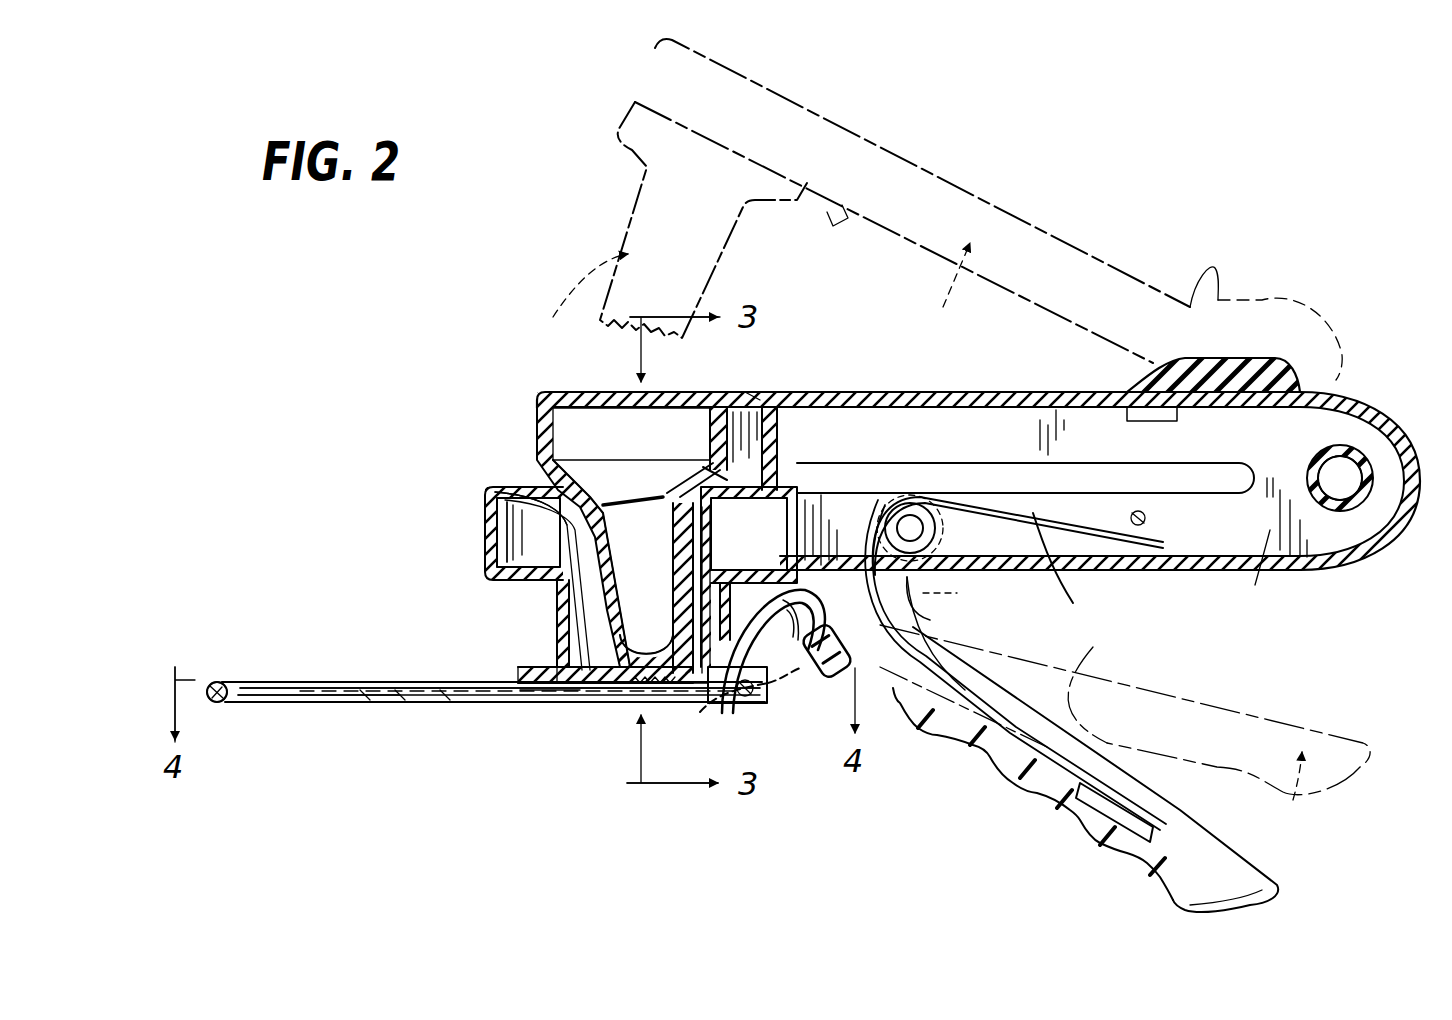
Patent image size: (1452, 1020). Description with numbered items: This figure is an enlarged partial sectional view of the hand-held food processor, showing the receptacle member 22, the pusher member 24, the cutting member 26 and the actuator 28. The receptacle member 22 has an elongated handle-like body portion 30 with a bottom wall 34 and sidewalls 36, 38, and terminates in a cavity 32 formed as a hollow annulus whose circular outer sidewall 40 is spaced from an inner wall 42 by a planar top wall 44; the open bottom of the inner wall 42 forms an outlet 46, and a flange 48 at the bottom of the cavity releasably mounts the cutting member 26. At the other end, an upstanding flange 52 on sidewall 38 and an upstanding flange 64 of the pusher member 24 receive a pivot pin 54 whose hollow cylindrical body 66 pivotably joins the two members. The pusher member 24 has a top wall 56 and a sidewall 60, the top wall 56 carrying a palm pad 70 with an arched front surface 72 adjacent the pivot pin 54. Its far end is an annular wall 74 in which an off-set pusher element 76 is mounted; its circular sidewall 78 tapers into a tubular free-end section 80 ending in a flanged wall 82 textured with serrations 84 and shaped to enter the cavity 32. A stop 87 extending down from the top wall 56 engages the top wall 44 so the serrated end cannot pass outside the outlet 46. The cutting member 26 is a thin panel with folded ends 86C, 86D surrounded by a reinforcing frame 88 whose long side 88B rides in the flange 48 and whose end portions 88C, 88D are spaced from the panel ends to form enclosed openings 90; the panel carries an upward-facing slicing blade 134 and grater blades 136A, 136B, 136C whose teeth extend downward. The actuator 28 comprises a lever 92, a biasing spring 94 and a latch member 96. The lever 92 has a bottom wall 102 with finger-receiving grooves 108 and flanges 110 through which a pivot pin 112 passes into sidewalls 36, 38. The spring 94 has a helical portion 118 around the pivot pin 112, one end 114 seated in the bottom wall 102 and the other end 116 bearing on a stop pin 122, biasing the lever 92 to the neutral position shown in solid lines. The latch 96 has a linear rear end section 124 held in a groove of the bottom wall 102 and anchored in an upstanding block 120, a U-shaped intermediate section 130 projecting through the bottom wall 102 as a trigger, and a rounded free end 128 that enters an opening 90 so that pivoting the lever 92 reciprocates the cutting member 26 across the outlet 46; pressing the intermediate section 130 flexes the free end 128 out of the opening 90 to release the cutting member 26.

The receptacle member 22 is at (924, 460).
The pusher member 24 is at (928, 392).
The cutting member 26 is at (447, 680).
The actuator 28 is at (1182, 886).
The handle-like body portion 30 is at (832, 492).
The cavity 32 is at (600, 540).
The bottom wall 34 is at (1165, 572).
The sidewall 36 is at (1045, 240).
The sidewall 38 is at (1255, 575).
The outer sidewall 40 is at (487, 515).
The inner wall 42 is at (500, 545).
The top wall 44 is at (540, 480).
The outlet 46 is at (600, 704).
The flange 48 is at (530, 667).
The upstanding flange 52 is at (1370, 440).
The pivot pin 54 is at (1367, 515).
The top wall 56 is at (805, 390).
The sidewall 60 is at (910, 366).
The upstanding flange 64 is at (1267, 473).
The hollow cylindrical body 66 is at (1335, 505).
The palm pad 70 is at (1275, 340).
The arched front surface 72 is at (1215, 300).
The annular wall 74 is at (540, 405).
The off-set pusher element 76 is at (588, 392).
The circular sidewall 78 is at (705, 470).
The free-end section 80 is at (665, 607).
The flanged wall 82 is at (702, 698).
The serrations or ridges 84 is at (637, 702).
The end 86C is at (710, 716).
The end 86D is at (246, 690).
The projection or stop 87 is at (828, 222).
The reinforcing frame 88 is at (457, 695).
The long side 88B is at (328, 682).
The end portion 88C is at (768, 690).
The end portion 88D is at (218, 682).
The enclosed opening 90 is at (745, 705).
The lever 92 is at (1125, 768).
The biasing spring 94 is at (1068, 585).
The latch member 96 is at (782, 614).
The bottom wall 102 is at (1160, 695).
The finger-receiving grooves 108 is at (980, 750).
The flanges 110 is at (905, 578).
The pivot pin 112 is at (912, 525).
The spring end 114 is at (930, 620).
The spring end 116 is at (1073, 513).
The helically wound intermediate portion 118 is at (897, 497).
The upstanding block 120 is at (1150, 820).
The stop pin 122 is at (1147, 518).
The rear end section 124 is at (1093, 660).
The rounded free end 128 is at (740, 715).
The intermediate section 130 is at (840, 690).
The slicing blade 134 is at (578, 698).
The grater blade 136A is at (365, 700).
The grater blade 136B is at (402, 700).
The grater blade 136C is at (447, 700).